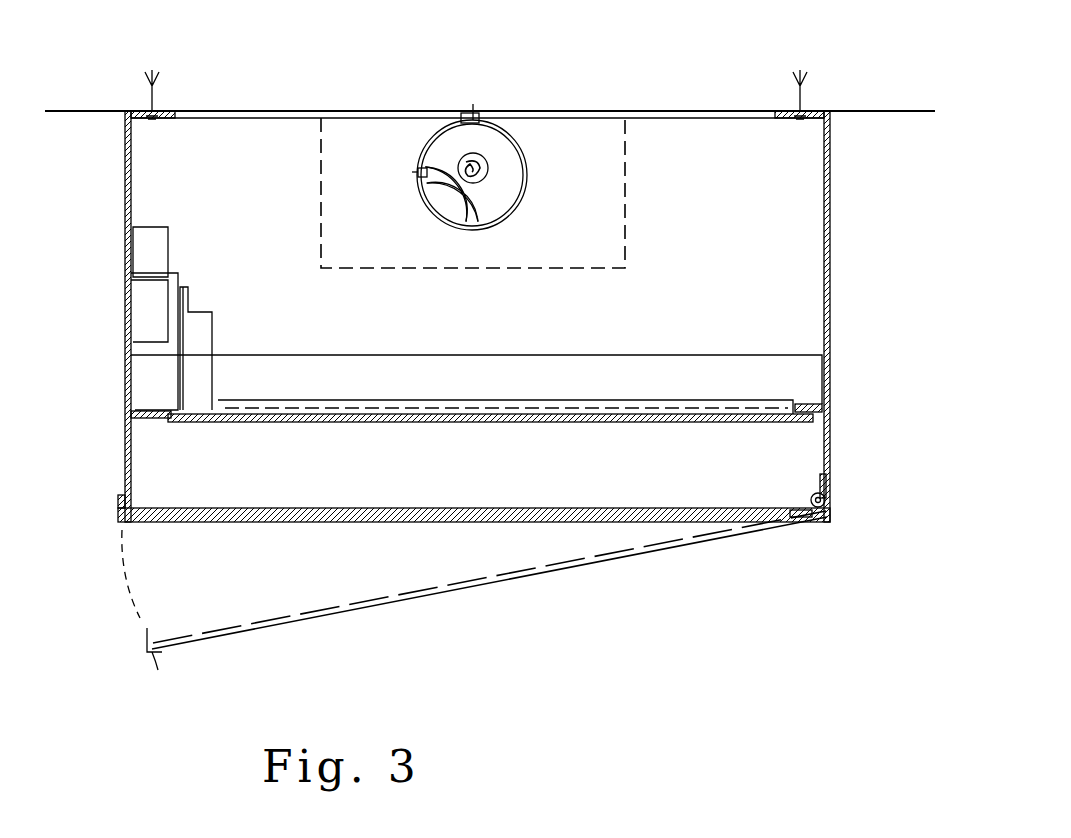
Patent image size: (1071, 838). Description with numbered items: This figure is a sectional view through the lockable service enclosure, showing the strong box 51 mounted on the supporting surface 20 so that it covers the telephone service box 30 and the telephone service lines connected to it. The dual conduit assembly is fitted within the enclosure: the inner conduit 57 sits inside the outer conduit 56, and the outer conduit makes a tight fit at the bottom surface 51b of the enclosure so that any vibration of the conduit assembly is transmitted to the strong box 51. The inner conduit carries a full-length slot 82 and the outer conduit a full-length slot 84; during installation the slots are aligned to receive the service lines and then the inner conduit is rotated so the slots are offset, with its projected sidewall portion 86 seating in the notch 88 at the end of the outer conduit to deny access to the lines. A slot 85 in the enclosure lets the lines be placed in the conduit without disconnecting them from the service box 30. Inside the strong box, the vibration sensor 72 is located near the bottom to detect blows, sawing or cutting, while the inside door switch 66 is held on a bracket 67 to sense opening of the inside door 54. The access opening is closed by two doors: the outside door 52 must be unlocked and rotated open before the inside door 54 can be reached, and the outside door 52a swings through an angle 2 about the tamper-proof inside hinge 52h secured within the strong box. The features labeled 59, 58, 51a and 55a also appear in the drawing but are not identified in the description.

The supporting surface 20 is at (88, 111).
The antenna 59 is at (153, 104).
The antenna 58 is at (790, 110).
The telephone service box 30 is at (320, 187).
The strong box 51 is at (125, 320).
The compartment 51a is at (622, 103).
The bottom surface 51b is at (680, 181).
The inner conduit 57 is at (498, 131).
The outer conduit 56 is at (526, 168).
The slot 82 is at (467, 206).
The slot 84 is at (477, 110).
The slot 85 is at (466, 104).
The projected sidewall portion 86 is at (413, 168).
The notch 88 is at (418, 160).
The inside door switch 66 is at (212, 312).
The bracket 67 is at (158, 275).
The vibration sensor 72 is at (155, 227).
The inside door 54 is at (627, 420).
The plate 55a is at (757, 398).
The outside door 52 is at (533, 521).
The outside door 52a is at (512, 583).
The inside hinge 52h is at (830, 519).
The angle 2 is at (487, 522).